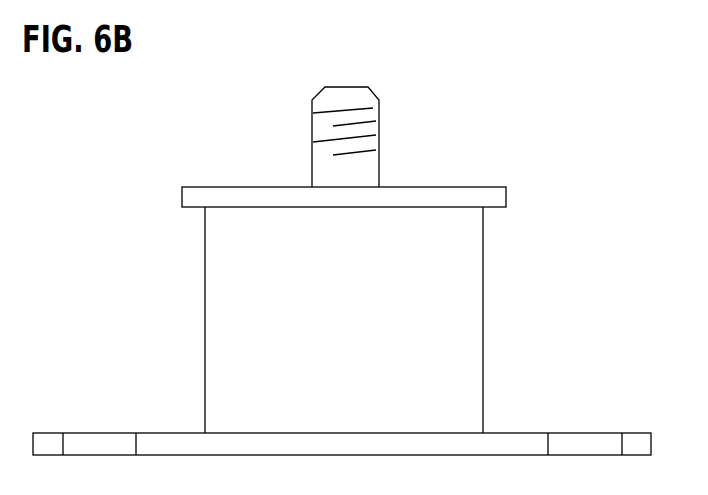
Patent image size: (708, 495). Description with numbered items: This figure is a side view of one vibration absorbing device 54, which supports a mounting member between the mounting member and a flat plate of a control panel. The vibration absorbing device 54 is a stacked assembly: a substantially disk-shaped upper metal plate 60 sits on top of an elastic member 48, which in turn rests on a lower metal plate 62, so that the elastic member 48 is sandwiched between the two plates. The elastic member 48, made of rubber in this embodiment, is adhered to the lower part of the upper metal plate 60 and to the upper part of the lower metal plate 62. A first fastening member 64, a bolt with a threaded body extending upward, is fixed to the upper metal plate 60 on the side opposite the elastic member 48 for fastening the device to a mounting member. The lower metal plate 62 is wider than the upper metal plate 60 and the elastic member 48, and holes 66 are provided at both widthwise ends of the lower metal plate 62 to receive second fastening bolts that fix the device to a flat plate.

The vibration absorbing device 54 is at (604, 60).
The elastic member 48 is at (475, 300).
The upper metal plate 60 is at (486, 187).
The first fastening member 64 is at (312, 128).
The lower metal plate 62 is at (500, 448).
The hole 66 is at (97, 441).